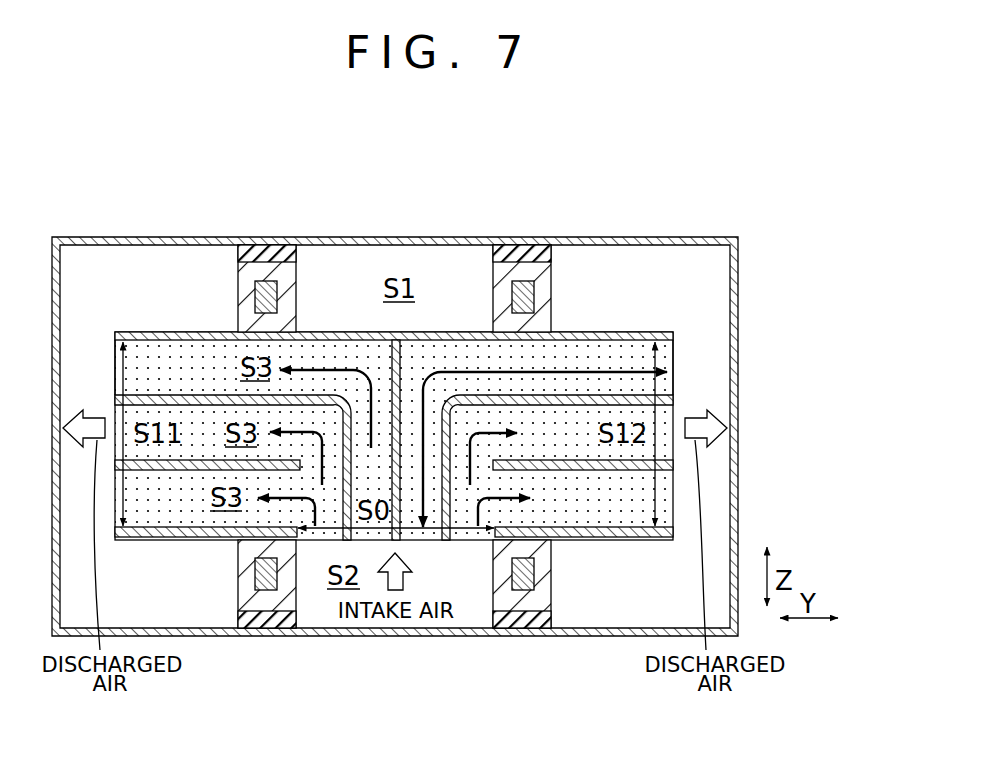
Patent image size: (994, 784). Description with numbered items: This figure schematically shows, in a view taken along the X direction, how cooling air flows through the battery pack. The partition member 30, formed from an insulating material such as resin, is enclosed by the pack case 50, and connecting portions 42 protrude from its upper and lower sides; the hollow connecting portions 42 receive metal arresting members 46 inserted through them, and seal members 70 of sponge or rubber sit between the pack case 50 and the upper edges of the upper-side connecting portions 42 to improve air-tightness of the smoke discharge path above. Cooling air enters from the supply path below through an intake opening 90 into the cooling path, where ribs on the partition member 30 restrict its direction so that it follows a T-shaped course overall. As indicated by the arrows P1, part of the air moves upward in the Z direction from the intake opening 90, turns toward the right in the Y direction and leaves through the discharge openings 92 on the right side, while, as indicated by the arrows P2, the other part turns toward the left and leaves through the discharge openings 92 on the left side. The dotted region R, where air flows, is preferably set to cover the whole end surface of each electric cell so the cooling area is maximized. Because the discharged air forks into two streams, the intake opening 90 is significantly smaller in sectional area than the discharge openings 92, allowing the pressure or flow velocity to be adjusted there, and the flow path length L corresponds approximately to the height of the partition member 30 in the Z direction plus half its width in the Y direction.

The partition member 30 is at (668, 326).
The connecting portion 42 is at (242, 278).
The arresting member 46 is at (257, 301).
The pack case 50 is at (738, 281).
The seal member 70 is at (240, 253).
The intake opening 90 is at (439, 553).
The discharge opening 92 is at (103, 386).
The flow path length L is at (600, 373).
The region where air flows R is at (151, 512).
The arrows P1 is at (501, 369).
The arrows P2 is at (303, 370).